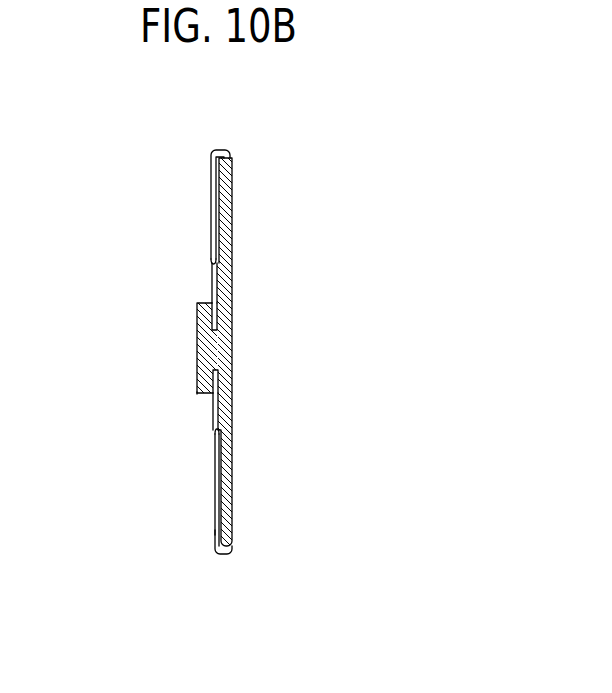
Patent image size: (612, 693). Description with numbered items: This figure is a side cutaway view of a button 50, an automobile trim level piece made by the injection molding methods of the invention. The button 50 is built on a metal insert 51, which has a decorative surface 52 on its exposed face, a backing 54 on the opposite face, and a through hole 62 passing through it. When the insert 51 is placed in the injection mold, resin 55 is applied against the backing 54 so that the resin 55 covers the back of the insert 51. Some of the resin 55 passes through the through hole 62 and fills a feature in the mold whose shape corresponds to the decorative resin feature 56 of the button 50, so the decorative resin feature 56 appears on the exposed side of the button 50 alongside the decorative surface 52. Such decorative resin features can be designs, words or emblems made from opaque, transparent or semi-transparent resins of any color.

The button 50 is at (223, 142).
The resin 55 is at (228, 207).
The backing 54 is at (228, 531).
The through hole 62 is at (225, 348).
The decorative resin feature 56 is at (197, 393).
The insert 51 is at (217, 482).
The decorative surface 52 is at (212, 532).